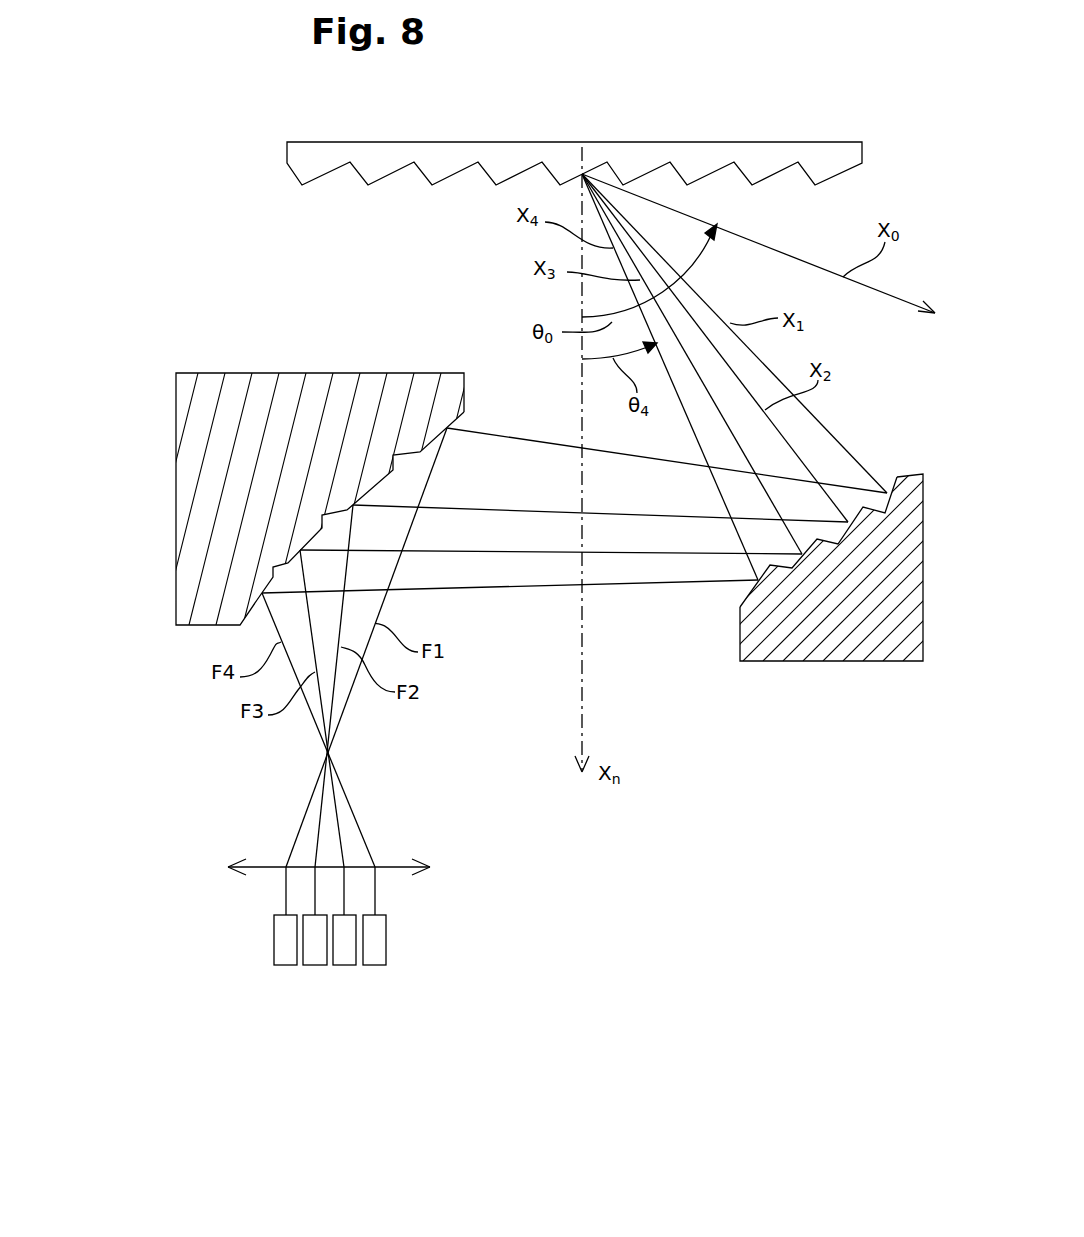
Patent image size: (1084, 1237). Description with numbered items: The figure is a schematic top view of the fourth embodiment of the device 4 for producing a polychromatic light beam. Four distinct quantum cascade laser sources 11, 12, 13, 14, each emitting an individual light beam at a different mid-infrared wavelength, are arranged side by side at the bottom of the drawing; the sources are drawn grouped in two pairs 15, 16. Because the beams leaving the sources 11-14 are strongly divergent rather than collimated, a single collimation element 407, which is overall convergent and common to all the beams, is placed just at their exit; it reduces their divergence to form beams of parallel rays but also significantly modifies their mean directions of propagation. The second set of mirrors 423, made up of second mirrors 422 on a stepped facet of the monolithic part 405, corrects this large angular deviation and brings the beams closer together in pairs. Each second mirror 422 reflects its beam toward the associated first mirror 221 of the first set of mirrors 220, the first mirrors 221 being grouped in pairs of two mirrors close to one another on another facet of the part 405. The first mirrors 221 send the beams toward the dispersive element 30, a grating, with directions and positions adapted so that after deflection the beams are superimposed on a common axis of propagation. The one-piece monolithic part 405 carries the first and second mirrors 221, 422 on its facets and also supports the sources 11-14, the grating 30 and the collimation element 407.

The device for producing a polychromatic light beam 4 is at (220, 270).
The dispersive element 30 is at (315, 157).
The monolithic part 405 is at (573, 561).
The second set of mirrors 423 is at (263, 501).
The second mirror 422 is at (425, 444).
The first set of mirrors 220 is at (824, 613).
The first mirror 221 is at (937, 706).
The collimation element 407 is at (387, 865).
The laser source 11 is at (287, 947).
The laser source 12 is at (313, 947).
The laser source 13 is at (343, 948).
The laser source 14 is at (375, 948).
The light source pair 15 is at (282, 988).
The light source pair 16 is at (385, 987).